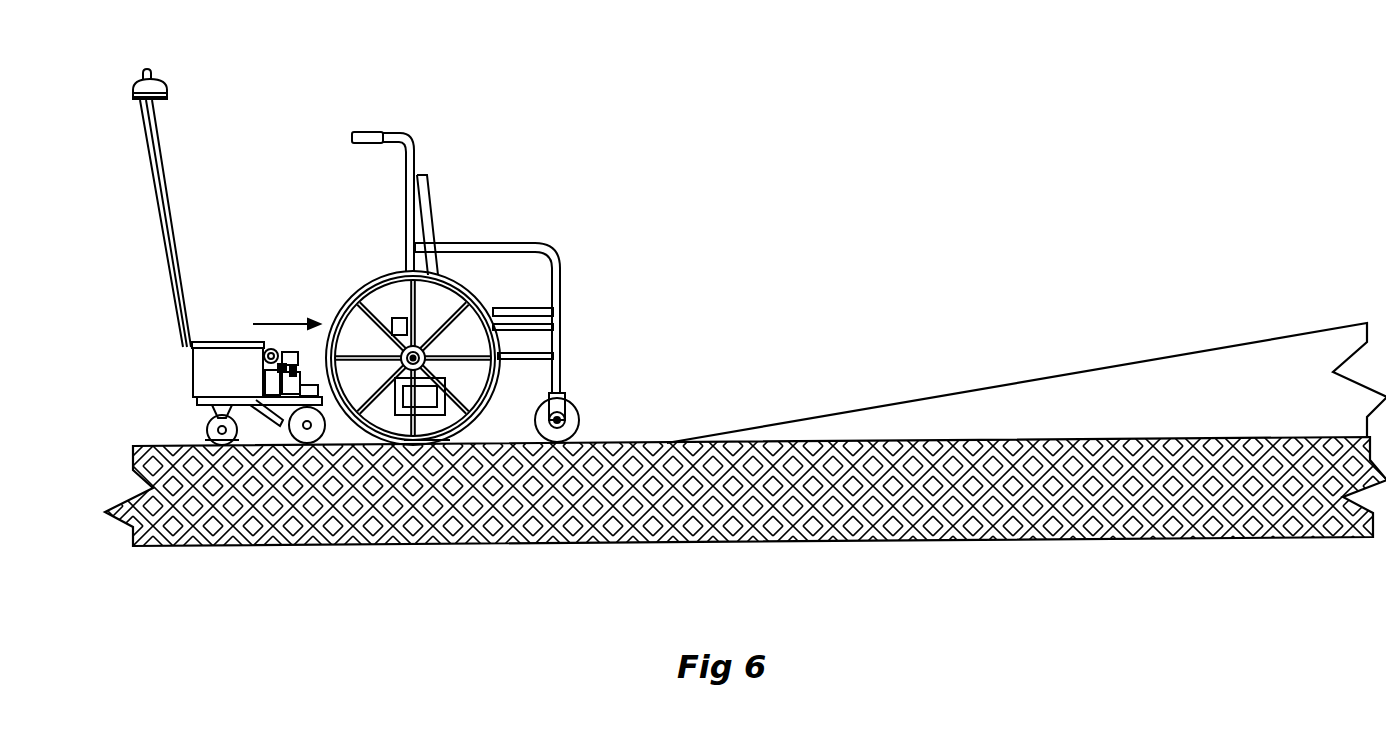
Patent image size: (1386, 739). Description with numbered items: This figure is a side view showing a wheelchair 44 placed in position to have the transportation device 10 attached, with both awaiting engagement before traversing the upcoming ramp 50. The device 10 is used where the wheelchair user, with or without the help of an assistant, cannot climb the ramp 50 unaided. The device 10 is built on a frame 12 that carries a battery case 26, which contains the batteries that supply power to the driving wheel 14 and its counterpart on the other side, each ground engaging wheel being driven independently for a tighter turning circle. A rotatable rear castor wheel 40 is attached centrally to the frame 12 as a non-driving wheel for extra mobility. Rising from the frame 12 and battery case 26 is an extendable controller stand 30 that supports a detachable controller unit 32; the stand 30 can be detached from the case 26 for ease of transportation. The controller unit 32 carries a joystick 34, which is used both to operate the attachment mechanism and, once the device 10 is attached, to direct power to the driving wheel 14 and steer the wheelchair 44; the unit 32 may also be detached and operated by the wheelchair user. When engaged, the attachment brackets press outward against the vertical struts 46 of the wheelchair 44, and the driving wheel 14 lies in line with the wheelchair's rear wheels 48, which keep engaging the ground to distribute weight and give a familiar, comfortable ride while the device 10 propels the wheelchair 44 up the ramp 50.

The transportation device 10 is at (124, 287).
The frame 12 is at (210, 402).
The driving wheel 14 is at (310, 446).
The battery case 26 is at (205, 375).
The extendable controller stand 30 is at (165, 195).
The controller unit 32 is at (167, 88).
The joystick 34 is at (151, 74).
The rear castor wheel 40 is at (220, 446).
The wheelchair 44 is at (452, 366).
The vertical struts 46 is at (400, 413).
The wheelchair rear wheels 48 is at (437, 440).
The ramp 50 is at (872, 408).